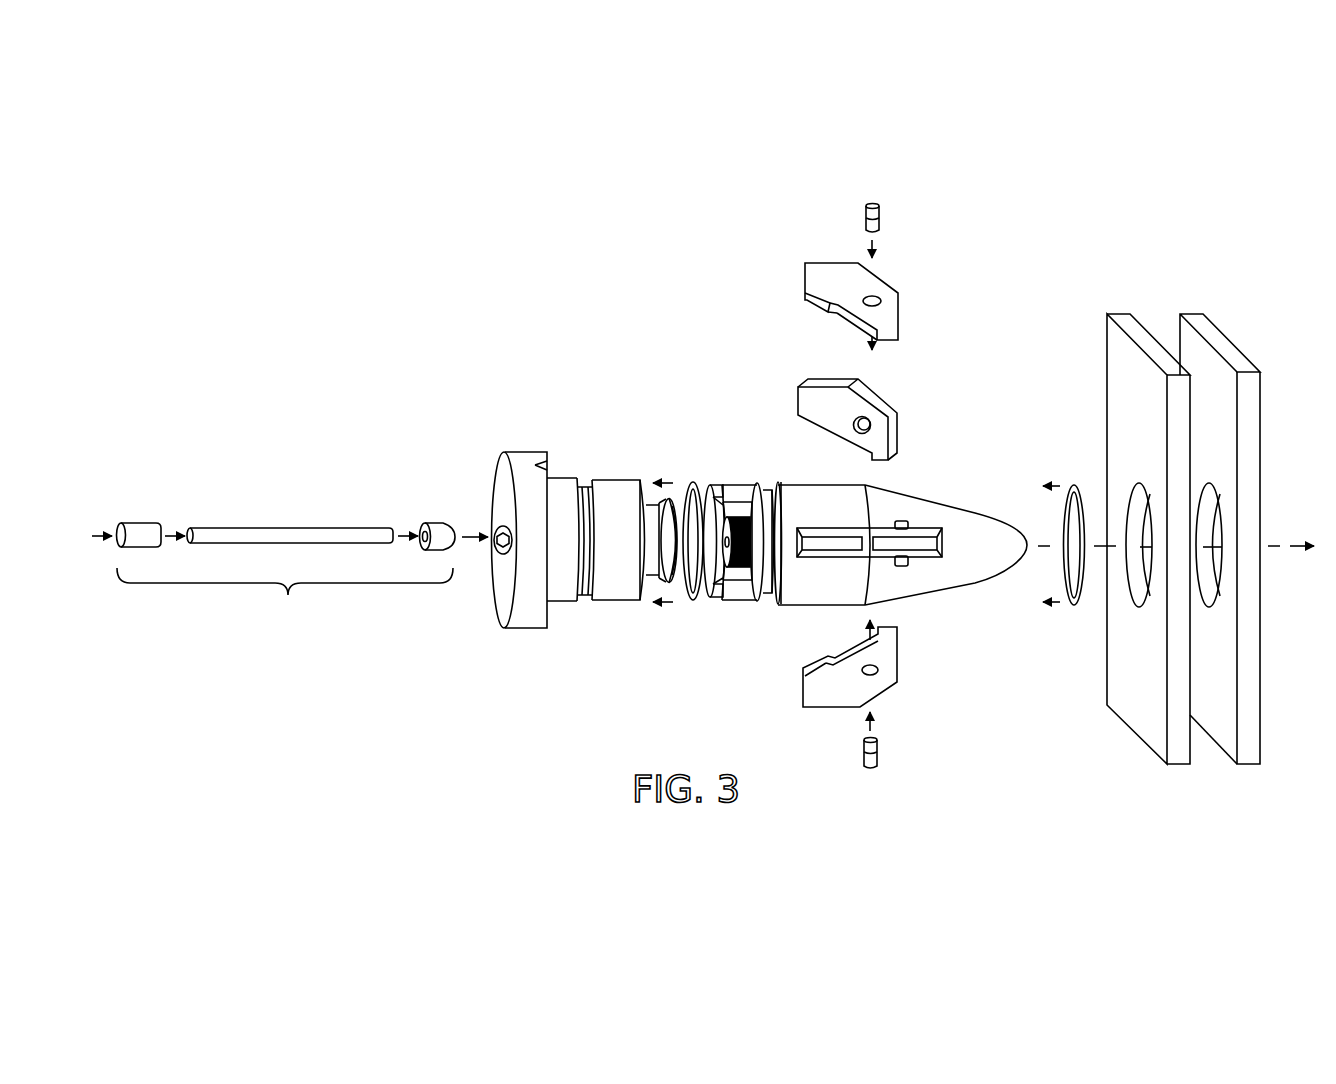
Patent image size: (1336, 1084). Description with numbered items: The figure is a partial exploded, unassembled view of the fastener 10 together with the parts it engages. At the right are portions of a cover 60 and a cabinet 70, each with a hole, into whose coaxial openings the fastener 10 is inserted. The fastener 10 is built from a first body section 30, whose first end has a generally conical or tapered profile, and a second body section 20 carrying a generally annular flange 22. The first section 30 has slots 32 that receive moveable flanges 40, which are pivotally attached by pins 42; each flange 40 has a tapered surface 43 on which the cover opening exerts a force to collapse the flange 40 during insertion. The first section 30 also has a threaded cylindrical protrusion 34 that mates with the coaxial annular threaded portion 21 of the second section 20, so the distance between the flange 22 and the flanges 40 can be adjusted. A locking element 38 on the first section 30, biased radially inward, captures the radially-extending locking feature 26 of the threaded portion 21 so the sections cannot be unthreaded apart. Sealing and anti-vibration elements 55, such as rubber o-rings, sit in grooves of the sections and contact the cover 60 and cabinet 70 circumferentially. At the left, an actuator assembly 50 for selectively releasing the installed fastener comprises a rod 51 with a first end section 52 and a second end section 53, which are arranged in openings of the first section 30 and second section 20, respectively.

The fastener 10 is at (606, 627).
The second body section 20 is at (618, 482).
The annular threaded portion 21 is at (652, 570).
The annular flange 22 is at (519, 452).
The locking feature 26 is at (672, 584).
The first body section 30 is at (975, 562).
The slots 32 is at (932, 536).
The cylindrical protrusion 34 is at (738, 516).
The locking element 38 is at (710, 598).
The flanges 40 is at (876, 288).
The pins 42 is at (881, 222).
The tapered surface 43 is at (876, 399).
The actuator assembly 50 is at (285, 595).
The rod 51 is at (275, 530).
The first end section 52 is at (436, 528).
The second end section 53 is at (138, 523).
The sealing/anti-vibration elements 55 is at (694, 482).
The cover 60 is at (1121, 316).
The cabinet 70 is at (1210, 330).